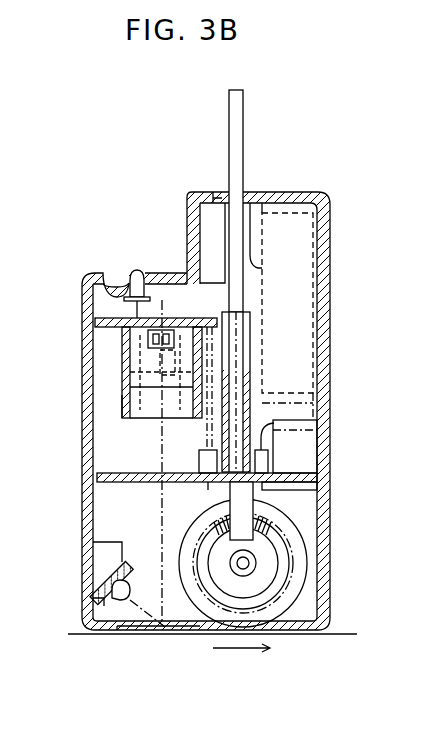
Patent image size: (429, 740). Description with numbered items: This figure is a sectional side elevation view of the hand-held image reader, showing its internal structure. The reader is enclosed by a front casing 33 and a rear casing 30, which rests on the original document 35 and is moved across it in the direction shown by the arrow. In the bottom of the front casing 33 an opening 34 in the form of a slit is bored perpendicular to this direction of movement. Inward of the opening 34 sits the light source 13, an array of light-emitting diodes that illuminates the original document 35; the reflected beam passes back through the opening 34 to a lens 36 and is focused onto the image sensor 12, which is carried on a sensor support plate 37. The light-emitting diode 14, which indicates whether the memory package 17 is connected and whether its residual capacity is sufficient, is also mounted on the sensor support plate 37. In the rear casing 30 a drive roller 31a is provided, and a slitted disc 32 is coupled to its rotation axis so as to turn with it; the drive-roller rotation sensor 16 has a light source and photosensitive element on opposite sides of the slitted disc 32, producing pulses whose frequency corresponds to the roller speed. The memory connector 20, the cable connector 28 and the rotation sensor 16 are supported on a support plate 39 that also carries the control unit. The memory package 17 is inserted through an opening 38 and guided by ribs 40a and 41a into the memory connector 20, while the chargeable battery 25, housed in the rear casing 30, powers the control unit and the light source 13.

The image sensor 12 is at (152, 341).
The light source 13 is at (114, 602).
The light-emitting diode 14 is at (137, 268).
The drive-roller rotation sensor 16 is at (246, 508).
The memory package 17 is at (238, 101).
The memory connector 20 is at (248, 383).
The chargeable battery 25 is at (291, 277).
The cable connector 28 is at (297, 449).
The rear casing 30 is at (326, 195).
The drive roller 31a is at (293, 588).
The slitted disc 32 is at (277, 551).
The front casing 33 is at (96, 272).
The opening 34 is at (146, 632).
The original document 35 is at (331, 636).
The lens 36 is at (124, 400).
The sensor support plate 37 is at (106, 318).
The opening 38 is at (242, 200).
The support plate 39 is at (112, 481).
The rib 40a is at (196, 216).
The rib 41a is at (262, 232).